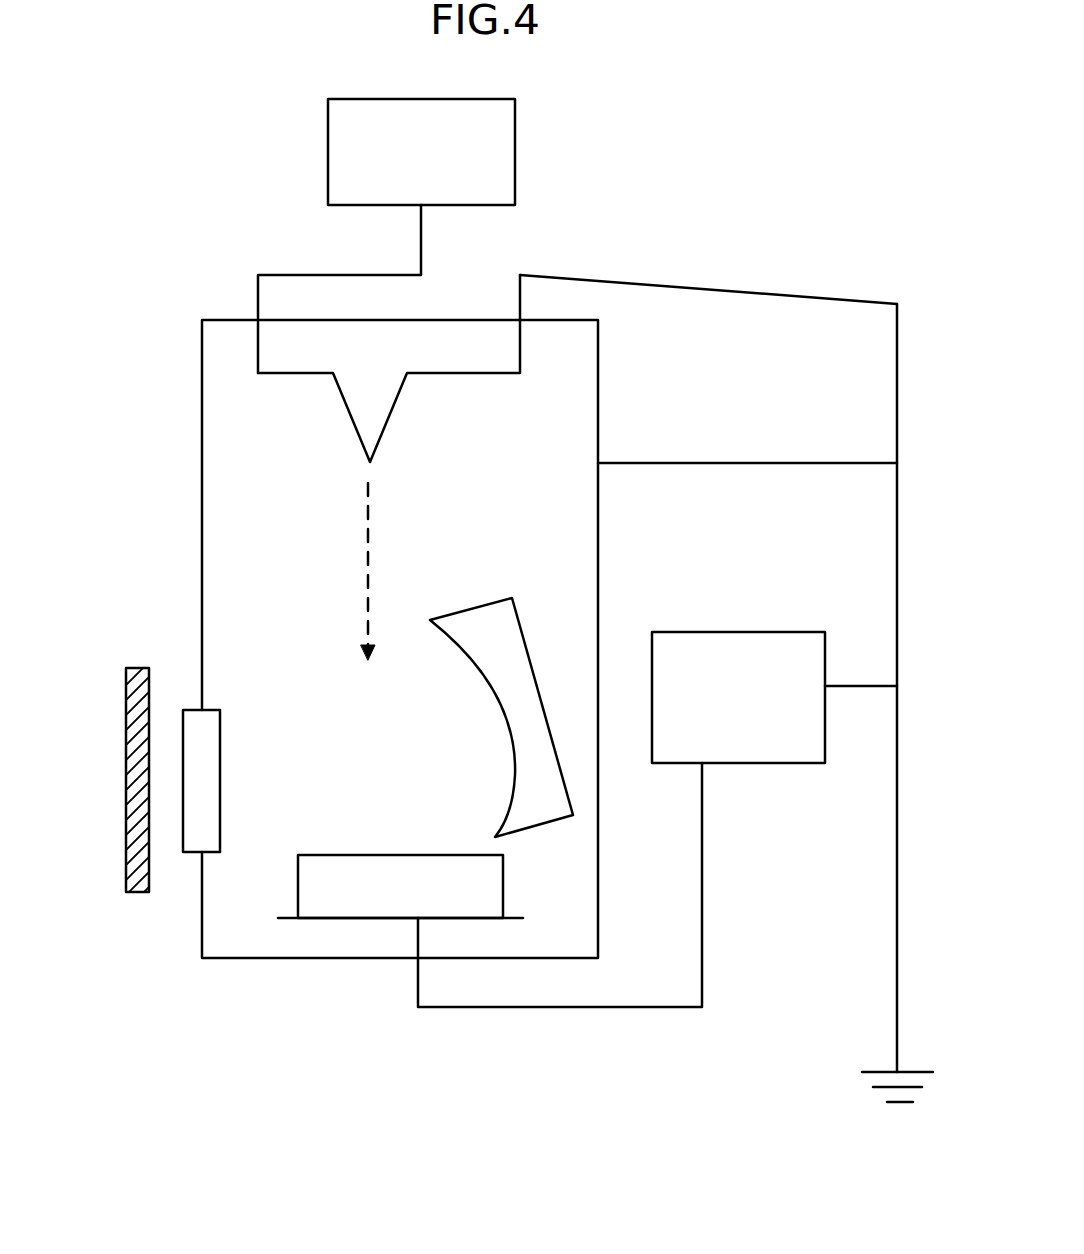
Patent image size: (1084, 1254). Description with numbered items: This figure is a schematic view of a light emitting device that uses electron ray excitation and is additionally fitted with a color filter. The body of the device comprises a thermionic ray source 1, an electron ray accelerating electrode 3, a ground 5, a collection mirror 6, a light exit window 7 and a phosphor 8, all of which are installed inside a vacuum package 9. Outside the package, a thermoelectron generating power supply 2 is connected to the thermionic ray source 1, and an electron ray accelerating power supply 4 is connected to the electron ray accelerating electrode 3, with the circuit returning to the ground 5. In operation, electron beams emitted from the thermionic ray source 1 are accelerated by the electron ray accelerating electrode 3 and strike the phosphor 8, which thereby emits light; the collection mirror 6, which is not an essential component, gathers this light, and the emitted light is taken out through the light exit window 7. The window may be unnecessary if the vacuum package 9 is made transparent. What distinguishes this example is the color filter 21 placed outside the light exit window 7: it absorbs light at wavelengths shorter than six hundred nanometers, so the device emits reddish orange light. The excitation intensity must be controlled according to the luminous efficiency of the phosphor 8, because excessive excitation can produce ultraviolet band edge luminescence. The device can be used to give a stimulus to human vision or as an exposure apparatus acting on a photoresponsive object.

The thermionic ray source 1 is at (372, 422).
The thermoelectron generating power supply 2 is at (515, 151).
The electron ray accelerating electrode 3 is at (457, 919).
The electron ray accelerating power supply 4 is at (728, 764).
The ground 5 is at (878, 1089).
The collection mirror 6 is at (510, 767).
The light exit window 7 is at (193, 853).
The phosphor 8 is at (297, 888).
The vacuum package 9 is at (201, 405).
The color filter 21 is at (126, 857).